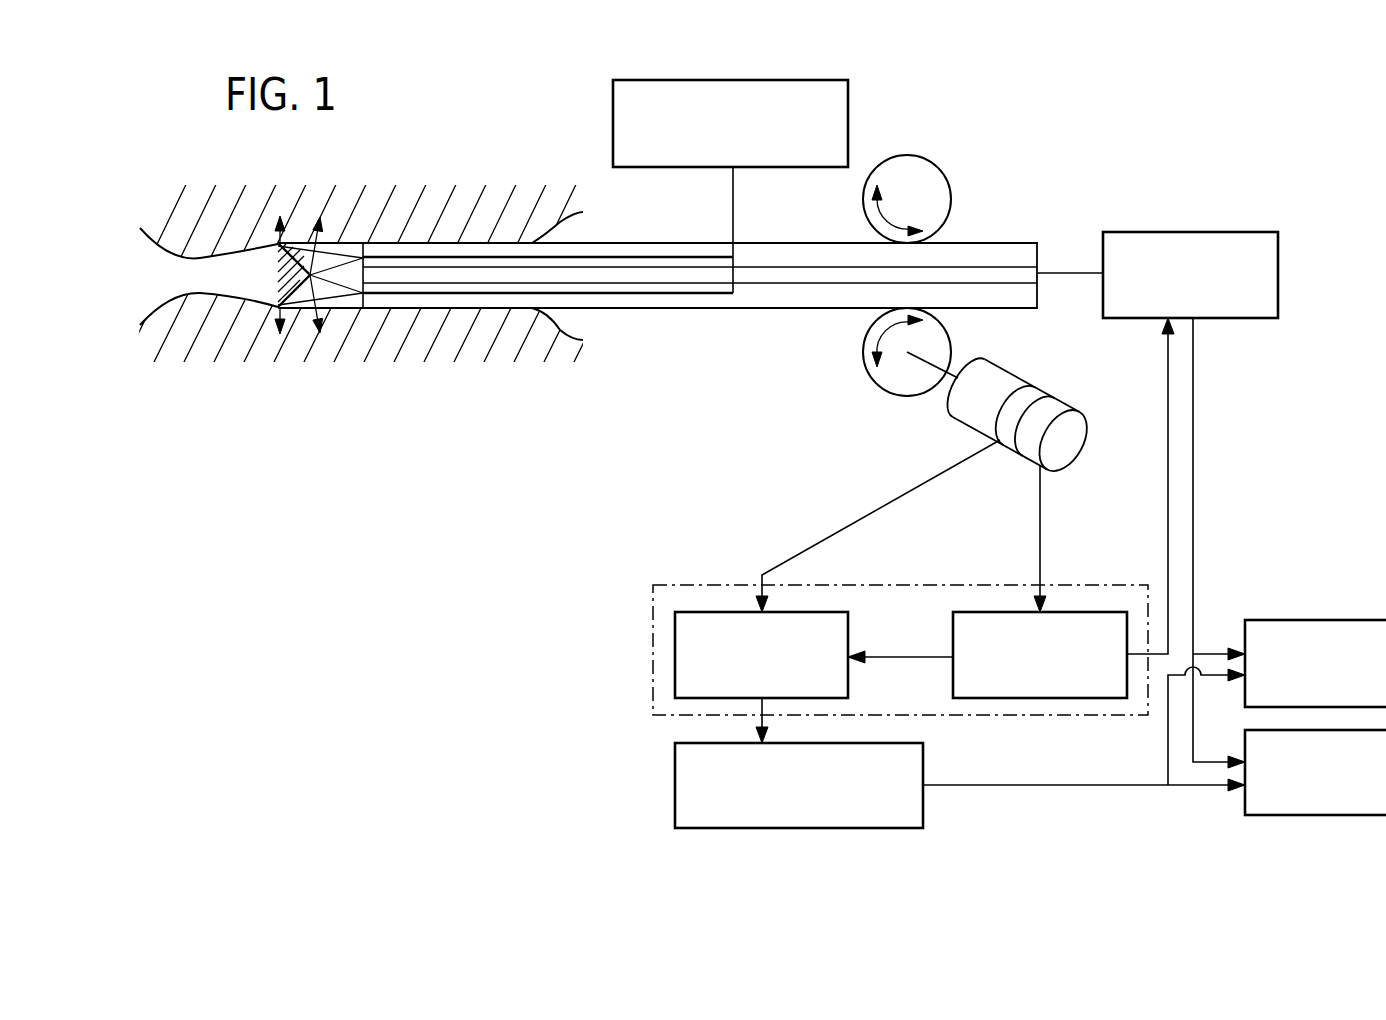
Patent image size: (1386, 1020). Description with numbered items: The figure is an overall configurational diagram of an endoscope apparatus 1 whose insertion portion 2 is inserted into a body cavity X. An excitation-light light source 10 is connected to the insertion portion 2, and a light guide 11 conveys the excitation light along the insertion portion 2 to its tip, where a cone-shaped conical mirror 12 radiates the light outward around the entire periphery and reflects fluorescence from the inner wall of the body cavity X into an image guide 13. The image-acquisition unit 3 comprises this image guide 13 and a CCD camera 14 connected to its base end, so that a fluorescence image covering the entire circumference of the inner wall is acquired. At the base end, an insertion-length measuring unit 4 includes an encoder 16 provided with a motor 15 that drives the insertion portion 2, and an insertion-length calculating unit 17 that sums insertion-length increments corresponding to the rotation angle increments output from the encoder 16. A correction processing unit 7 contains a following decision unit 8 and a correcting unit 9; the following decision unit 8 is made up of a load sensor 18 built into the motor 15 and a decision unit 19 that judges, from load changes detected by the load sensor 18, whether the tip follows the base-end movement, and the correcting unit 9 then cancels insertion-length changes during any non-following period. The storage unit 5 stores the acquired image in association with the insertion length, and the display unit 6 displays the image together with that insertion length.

The endoscope apparatus 1 is at (1078, 97).
The insertion portion 2 is at (634, 310).
The image-acquisition unit 3 is at (1093, 192).
The insertion-length measuring unit 4 is at (735, 507).
The storage unit 5 is at (1315, 816).
The display unit 6 is at (1336, 620).
The correction processing unit 7 is at (974, 585).
The following decision unit 8 is at (1122, 442).
The correcting unit 9 is at (853, 622).
The excitation-light light source 10 is at (848, 98).
The light guide 11 is at (665, 256).
The conical mirror 12 is at (278, 290).
The image guide 13 is at (770, 284).
The CCD camera 14 is at (1210, 232).
The motor 15 is at (1000, 373).
The encoder 16 is at (997, 420).
The insertion-length calculating unit 17 is at (673, 782).
The load sensor 18 is at (1068, 452).
The decision unit 19 is at (1088, 612).
The body cavity X is at (178, 258).